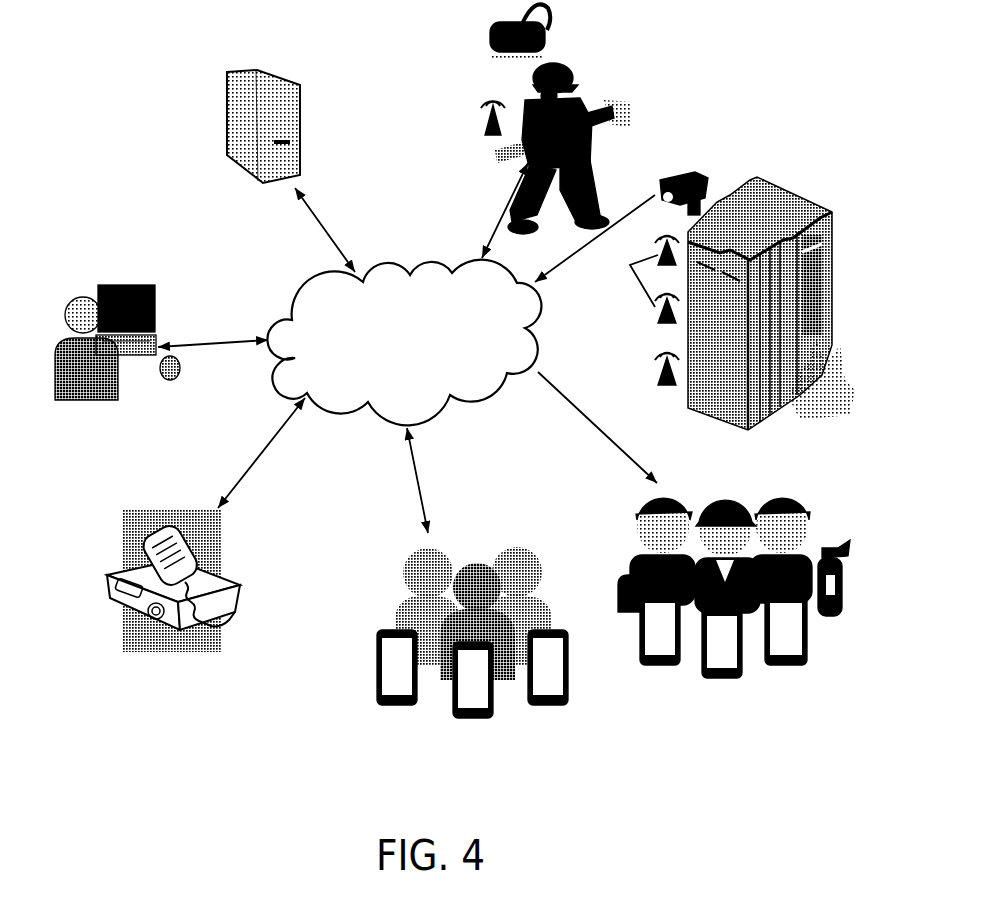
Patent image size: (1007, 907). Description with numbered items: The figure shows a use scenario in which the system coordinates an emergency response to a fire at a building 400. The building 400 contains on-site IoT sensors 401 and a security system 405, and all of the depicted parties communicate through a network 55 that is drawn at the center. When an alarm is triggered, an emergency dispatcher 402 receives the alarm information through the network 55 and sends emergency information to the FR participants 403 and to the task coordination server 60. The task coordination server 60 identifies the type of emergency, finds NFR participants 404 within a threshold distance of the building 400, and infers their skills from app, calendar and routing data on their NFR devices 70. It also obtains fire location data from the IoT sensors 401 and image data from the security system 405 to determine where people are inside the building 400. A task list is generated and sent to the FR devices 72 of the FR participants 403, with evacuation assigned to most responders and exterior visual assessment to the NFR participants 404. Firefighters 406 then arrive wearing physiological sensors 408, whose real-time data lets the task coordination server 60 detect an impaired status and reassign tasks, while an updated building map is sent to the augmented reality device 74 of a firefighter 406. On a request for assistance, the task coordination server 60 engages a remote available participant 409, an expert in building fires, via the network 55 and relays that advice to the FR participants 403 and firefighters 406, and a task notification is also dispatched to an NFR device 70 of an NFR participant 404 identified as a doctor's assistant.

The network 55 is at (385, 365).
The task coordination server 60 is at (218, 98).
The NFR devices 70 is at (392, 672).
The FR devices 72 is at (668, 647).
The augmented reality device 74 is at (492, 61).
The building 400 is at (818, 197).
The on-site IoT sensors 401 is at (545, 296).
The emergency dispatcher 402 is at (107, 580).
The FR participants 403 is at (807, 522).
The NFR participants 404 is at (479, 548).
The security system 405 is at (705, 198).
The firefighters 406 is at (560, 62).
The physiological sensors 408 is at (488, 123).
The remote available participant 409 is at (67, 312).